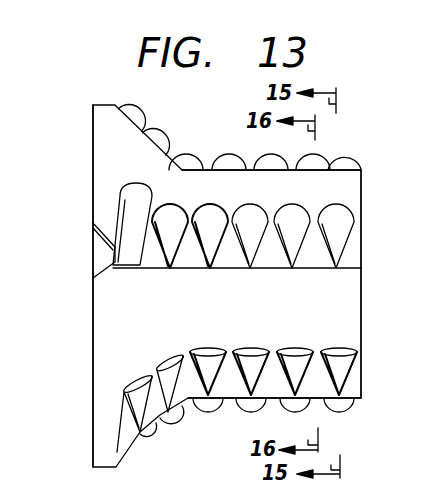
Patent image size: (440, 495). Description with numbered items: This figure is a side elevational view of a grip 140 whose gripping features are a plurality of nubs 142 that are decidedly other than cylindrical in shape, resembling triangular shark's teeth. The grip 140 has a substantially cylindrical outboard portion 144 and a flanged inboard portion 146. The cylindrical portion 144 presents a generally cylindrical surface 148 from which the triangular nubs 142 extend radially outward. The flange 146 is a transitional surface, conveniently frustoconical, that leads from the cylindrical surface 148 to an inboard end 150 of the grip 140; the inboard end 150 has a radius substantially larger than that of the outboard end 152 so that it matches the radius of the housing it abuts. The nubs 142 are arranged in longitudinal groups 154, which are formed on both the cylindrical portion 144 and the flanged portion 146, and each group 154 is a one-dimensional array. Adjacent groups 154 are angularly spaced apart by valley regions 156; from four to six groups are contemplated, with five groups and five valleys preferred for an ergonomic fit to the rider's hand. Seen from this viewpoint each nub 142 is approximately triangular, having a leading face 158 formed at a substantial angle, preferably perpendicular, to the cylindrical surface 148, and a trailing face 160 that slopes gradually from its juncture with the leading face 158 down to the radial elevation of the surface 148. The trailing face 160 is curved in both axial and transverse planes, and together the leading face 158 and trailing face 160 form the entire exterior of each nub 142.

The grip 140 is at (86, 66).
The nubs 142 is at (178, 207).
The cylindrical outboard portion 144 is at (348, 308).
The flanged inboard portion 146 is at (97, 322).
The cylindrical surface 148 is at (329, 311).
The inboard end 150 is at (93, 297).
The outboard end 152 is at (363, 271).
The longitudinal groups 154 is at (350, 158).
The valley regions 156 is at (283, 200).
The leading face 158 is at (229, 160).
The trailing face 160 is at (137, 183).